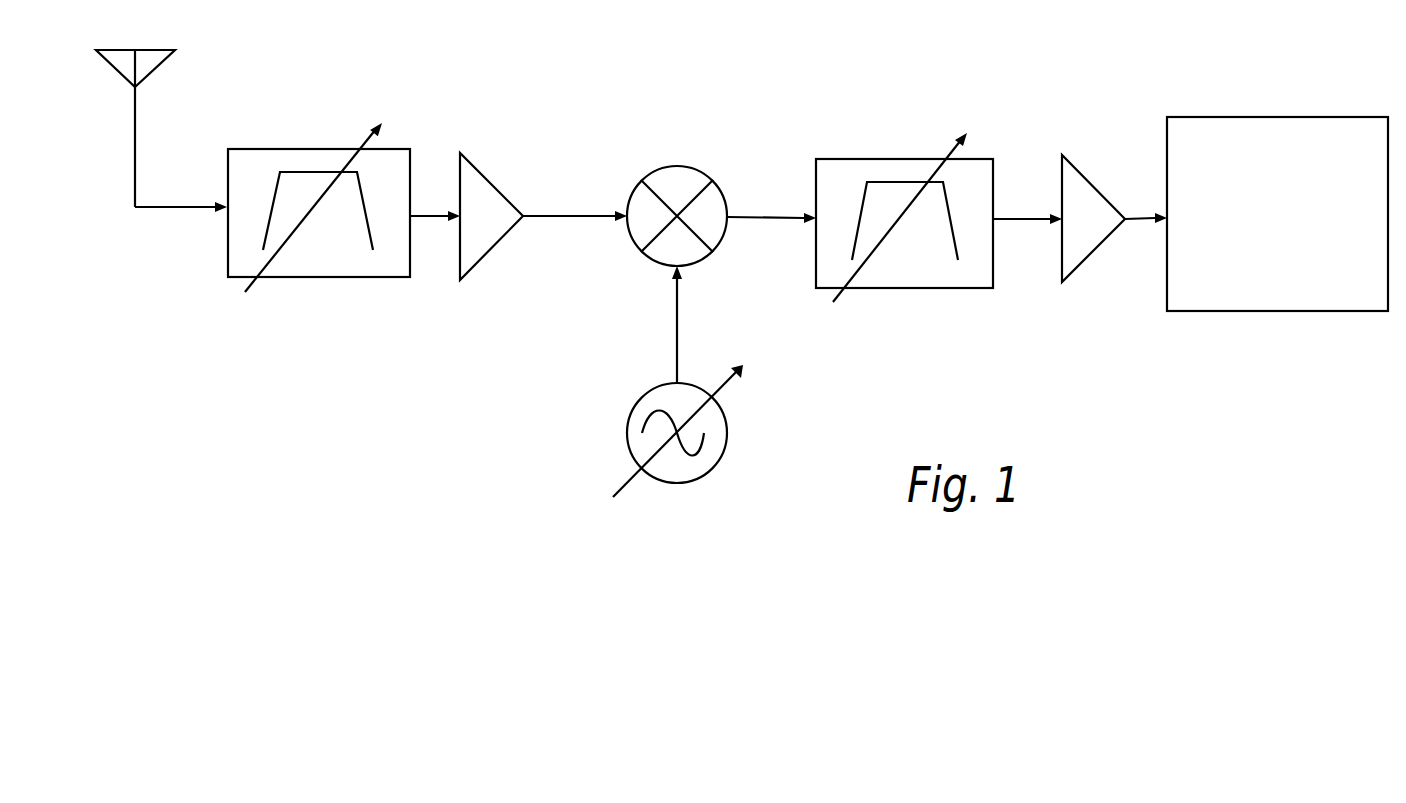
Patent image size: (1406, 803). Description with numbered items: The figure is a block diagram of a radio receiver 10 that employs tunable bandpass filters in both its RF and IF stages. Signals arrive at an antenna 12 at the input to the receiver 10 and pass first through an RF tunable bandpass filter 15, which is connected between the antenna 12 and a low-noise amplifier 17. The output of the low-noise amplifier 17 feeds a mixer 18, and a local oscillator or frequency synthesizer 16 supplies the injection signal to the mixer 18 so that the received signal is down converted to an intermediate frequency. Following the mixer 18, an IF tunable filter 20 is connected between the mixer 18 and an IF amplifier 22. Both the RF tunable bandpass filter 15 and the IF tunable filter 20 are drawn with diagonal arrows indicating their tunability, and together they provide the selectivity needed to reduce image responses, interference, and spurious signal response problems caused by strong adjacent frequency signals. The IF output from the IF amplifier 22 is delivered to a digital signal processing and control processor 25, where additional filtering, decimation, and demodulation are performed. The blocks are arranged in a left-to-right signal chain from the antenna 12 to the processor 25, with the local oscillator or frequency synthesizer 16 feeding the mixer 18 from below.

The radio receiver 10 is at (318, 397).
The antenna 12 is at (143, 46).
The RF tunable bandpass filter 15 is at (243, 149).
The local oscillator or frequency synthesizer 16 is at (648, 392).
The low-noise amplifier 17 is at (470, 160).
The mixer 18 is at (675, 167).
The IF tunable filter 20 is at (860, 159).
The IF amplifier 22 is at (1093, 187).
The digital signal processing and control processor 25 is at (1208, 117).